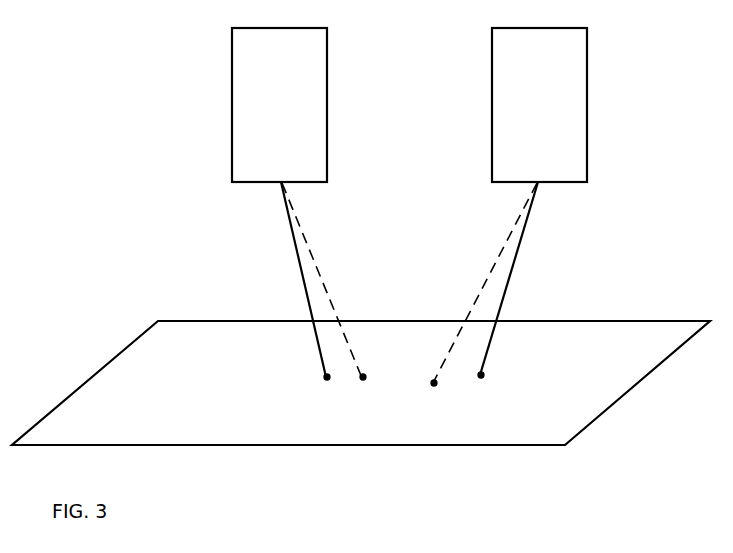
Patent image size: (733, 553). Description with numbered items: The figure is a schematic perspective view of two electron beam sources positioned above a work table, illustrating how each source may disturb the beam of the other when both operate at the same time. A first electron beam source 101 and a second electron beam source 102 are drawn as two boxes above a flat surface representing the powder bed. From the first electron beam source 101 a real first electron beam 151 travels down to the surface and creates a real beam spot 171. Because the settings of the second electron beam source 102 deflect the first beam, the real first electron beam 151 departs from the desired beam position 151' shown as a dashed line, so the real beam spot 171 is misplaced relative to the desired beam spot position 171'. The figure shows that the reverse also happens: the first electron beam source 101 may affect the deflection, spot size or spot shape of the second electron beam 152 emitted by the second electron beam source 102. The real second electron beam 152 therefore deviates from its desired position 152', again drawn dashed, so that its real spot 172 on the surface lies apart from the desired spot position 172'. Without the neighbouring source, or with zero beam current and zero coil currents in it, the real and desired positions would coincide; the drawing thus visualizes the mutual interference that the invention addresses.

The first electron beam source 101 is at (265, 118).
The second electron beam source 102 is at (560, 118).
The first electron beam 151 is at (269, 279).
The desired beam position 151' is at (342, 280).
The second electron beam 152 is at (539, 278).
The desired second beam position 152' is at (480, 283).
The real beam spot 171 is at (285, 434).
The desired beam spot position 171' is at (386, 434).
The real second beam spot 172 is at (534, 433).
The desired second beam spot position 172' is at (475, 438).